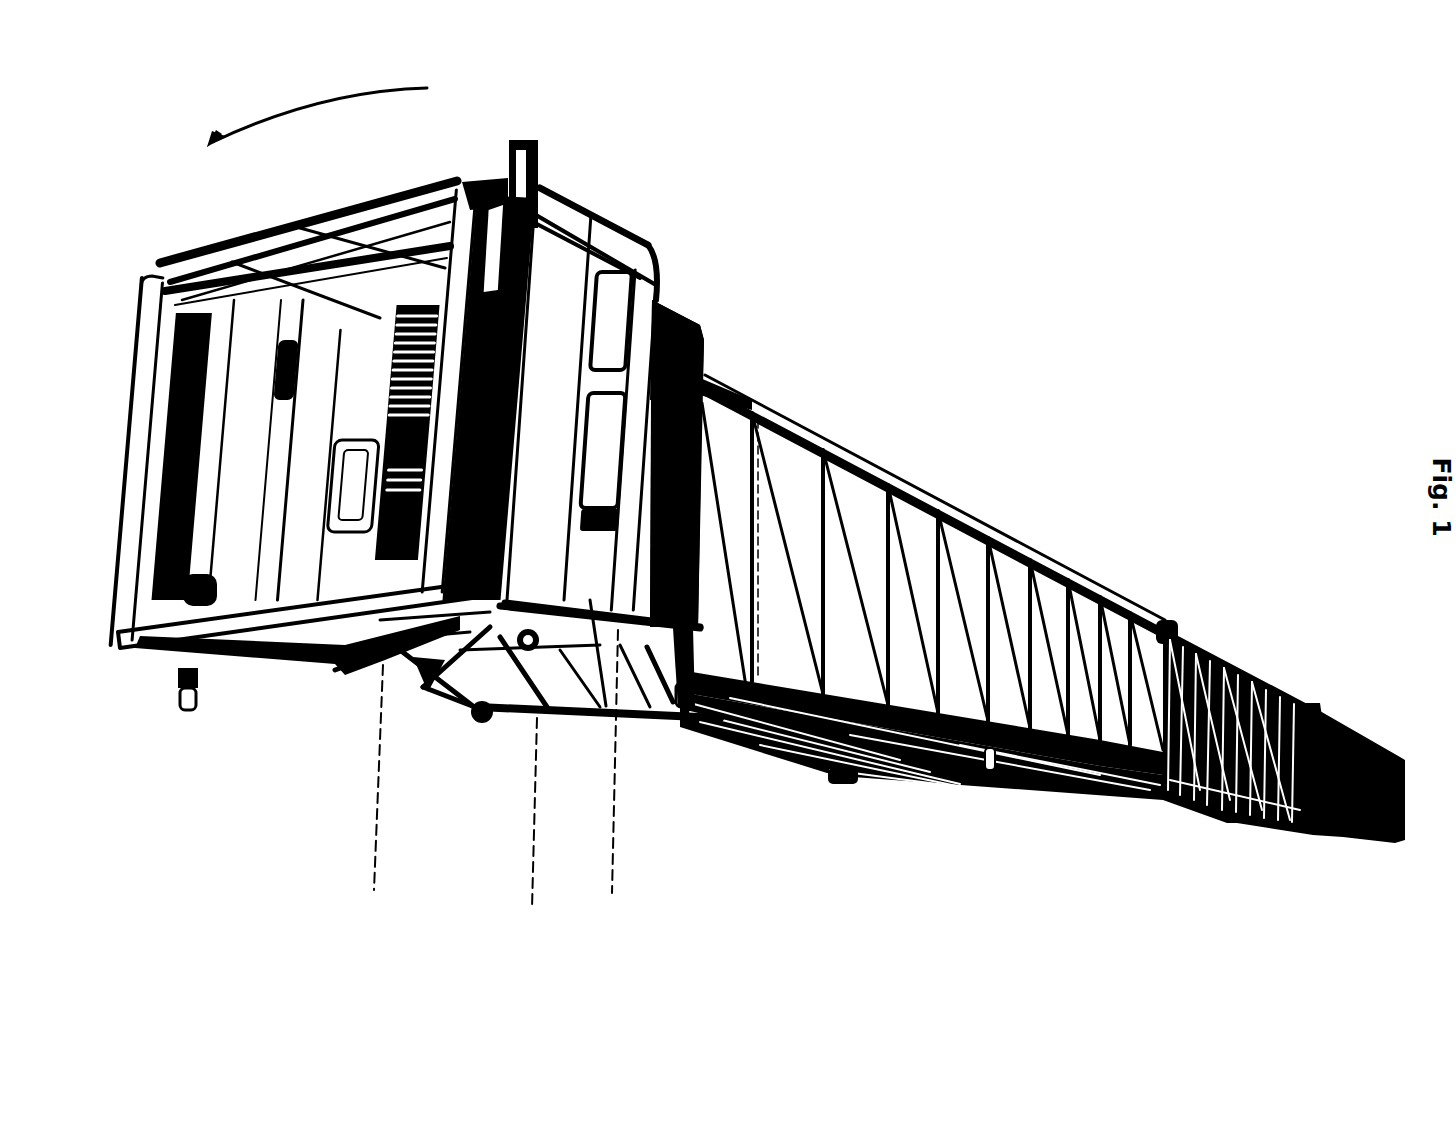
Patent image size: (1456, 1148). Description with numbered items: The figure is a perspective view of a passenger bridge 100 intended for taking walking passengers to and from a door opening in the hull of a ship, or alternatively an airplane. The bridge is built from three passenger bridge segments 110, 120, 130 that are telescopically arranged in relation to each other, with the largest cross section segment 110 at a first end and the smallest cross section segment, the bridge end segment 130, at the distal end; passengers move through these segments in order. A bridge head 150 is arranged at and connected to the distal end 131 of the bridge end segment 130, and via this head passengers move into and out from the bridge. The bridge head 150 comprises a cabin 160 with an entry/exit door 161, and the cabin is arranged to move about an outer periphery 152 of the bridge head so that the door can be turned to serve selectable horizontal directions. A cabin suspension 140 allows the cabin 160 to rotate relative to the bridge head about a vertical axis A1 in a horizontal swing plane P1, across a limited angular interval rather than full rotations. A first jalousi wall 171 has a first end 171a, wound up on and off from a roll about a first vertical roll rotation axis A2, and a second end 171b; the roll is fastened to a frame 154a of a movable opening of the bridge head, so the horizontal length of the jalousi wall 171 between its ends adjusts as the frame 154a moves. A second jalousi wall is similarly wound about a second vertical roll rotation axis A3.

The passenger bridge 100 is at (783, 800).
The passenger bridge segment 110 is at (1317, 833).
The passenger bridge segment 120 is at (1160, 810).
The bridge end segment 130 is at (997, 792).
The distal end 131 is at (570, 727).
The cabin suspension 140 is at (447, 693).
The bridge head 150 is at (708, 317).
The outer periphery 152 is at (698, 628).
The frame 154a is at (597, 597).
The cabin 160 is at (580, 190).
The entry/exit door 161 is at (388, 347).
The first jalousi wall 171 is at (703, 350).
The first end 171a is at (660, 307).
The second end 171b is at (705, 367).
The horizontal swing plane P1 is at (307, 117).
The vertical axis A1 is at (520, 815).
The first vertical roll rotation axis A2 is at (627, 762).
The second vertical roll rotation axis A3 is at (363, 779).